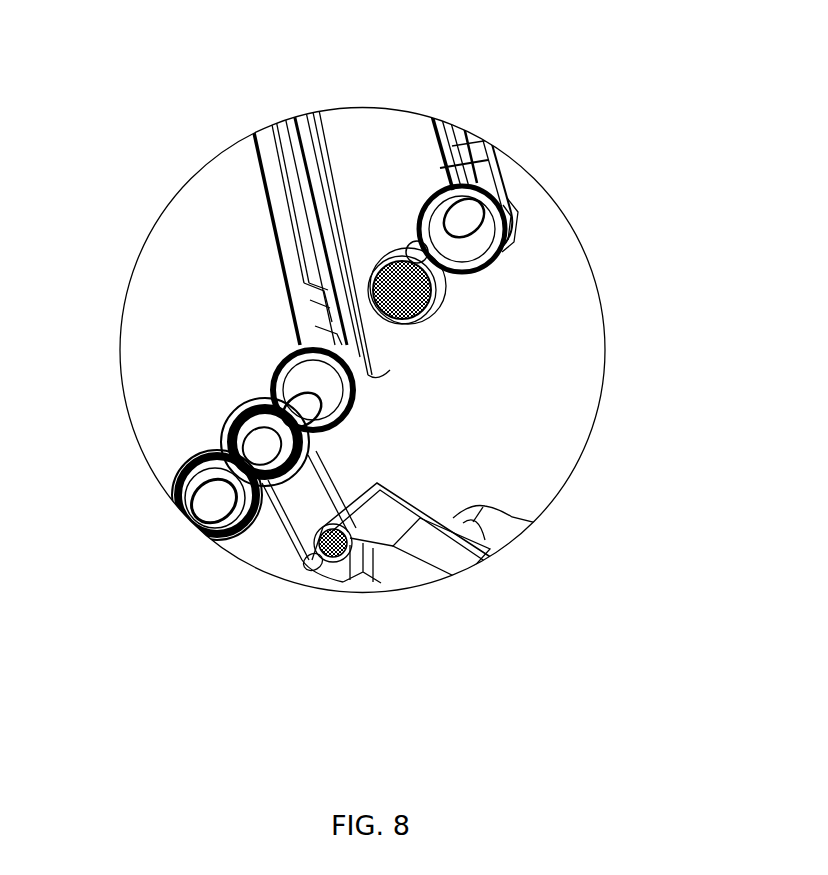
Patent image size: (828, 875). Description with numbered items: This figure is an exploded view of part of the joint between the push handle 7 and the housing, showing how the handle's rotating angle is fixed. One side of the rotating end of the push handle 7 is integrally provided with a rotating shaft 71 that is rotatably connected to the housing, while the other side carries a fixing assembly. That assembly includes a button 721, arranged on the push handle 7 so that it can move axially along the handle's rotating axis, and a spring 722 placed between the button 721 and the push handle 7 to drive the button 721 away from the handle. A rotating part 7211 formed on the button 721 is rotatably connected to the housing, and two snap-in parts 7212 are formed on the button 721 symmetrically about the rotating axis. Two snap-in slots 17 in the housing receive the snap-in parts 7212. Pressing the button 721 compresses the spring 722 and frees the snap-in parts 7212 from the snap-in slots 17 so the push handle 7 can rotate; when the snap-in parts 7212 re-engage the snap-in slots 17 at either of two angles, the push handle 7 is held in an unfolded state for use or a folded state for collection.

The push handle 7 is at (432, 123).
The snap-in parts 7212 is at (470, 177).
The rotating part 7211 is at (515, 218).
The button 721 is at (450, 285).
The spring 722 is at (428, 322).
The rotating shaft 71 is at (285, 366).
The snap-in slots 17 is at (232, 428).